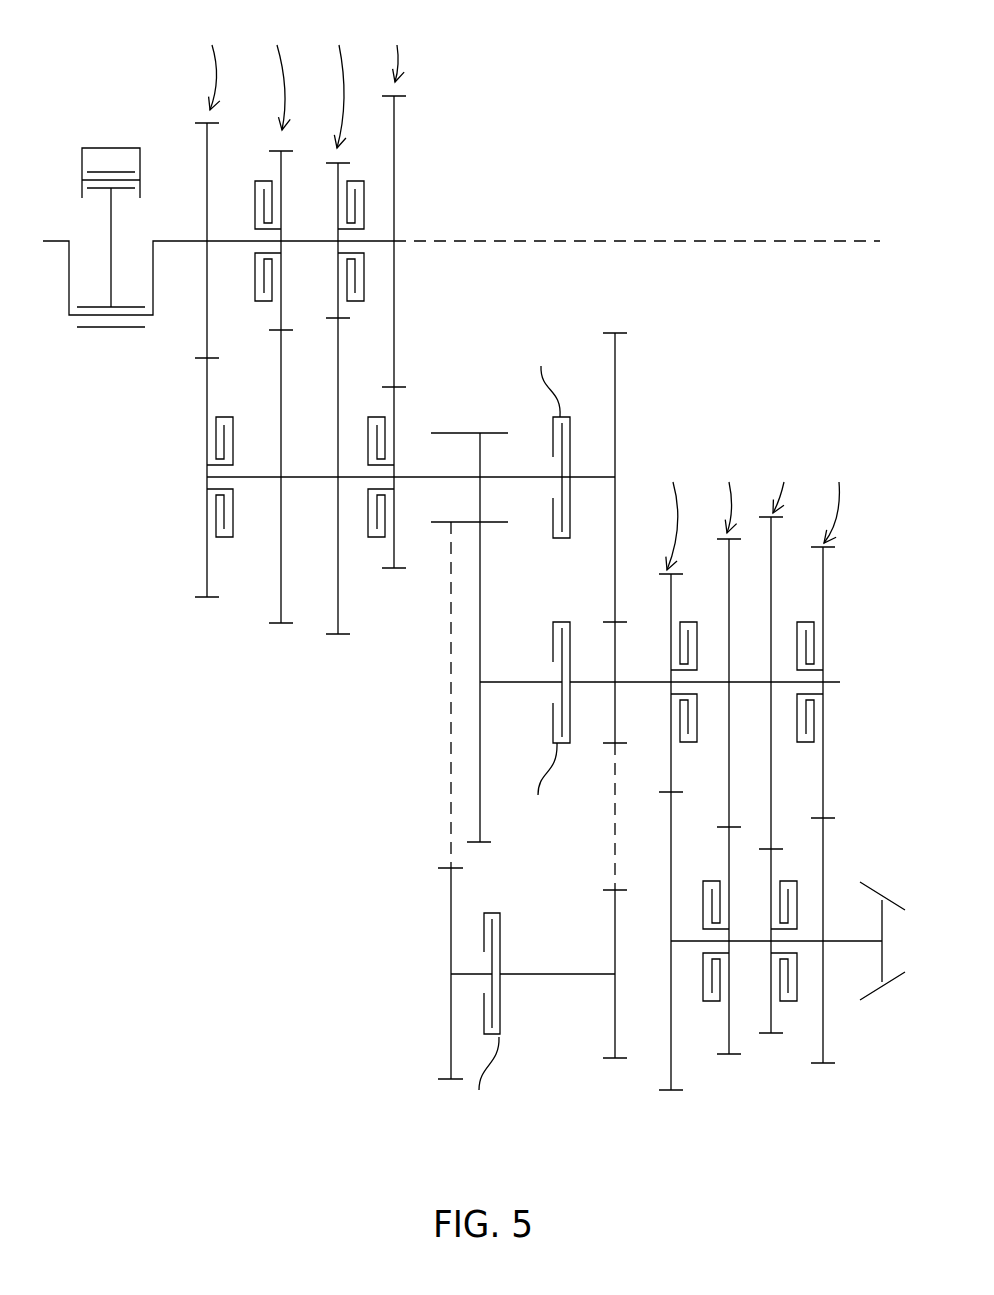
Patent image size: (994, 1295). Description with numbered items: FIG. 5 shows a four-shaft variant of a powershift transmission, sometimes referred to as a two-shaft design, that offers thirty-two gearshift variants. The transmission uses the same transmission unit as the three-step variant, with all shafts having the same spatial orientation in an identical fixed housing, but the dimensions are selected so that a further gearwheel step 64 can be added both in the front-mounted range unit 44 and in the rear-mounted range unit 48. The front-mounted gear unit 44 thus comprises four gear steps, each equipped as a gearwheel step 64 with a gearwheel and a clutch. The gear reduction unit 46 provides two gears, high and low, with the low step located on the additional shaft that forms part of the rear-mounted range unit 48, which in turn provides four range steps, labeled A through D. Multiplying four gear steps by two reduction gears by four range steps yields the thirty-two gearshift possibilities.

The front-mounted gear unit 44 is at (170, 606).
The gear reduction unit 46 is at (380, 795).
The rear-mounted range unit 48 is at (774, 1062).
The gearwheel step 64 is at (413, 297).